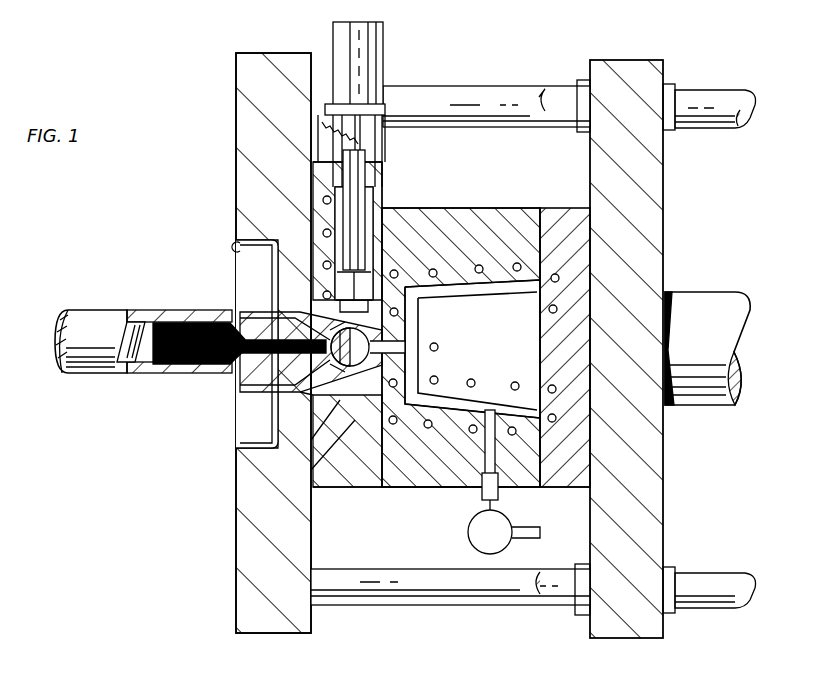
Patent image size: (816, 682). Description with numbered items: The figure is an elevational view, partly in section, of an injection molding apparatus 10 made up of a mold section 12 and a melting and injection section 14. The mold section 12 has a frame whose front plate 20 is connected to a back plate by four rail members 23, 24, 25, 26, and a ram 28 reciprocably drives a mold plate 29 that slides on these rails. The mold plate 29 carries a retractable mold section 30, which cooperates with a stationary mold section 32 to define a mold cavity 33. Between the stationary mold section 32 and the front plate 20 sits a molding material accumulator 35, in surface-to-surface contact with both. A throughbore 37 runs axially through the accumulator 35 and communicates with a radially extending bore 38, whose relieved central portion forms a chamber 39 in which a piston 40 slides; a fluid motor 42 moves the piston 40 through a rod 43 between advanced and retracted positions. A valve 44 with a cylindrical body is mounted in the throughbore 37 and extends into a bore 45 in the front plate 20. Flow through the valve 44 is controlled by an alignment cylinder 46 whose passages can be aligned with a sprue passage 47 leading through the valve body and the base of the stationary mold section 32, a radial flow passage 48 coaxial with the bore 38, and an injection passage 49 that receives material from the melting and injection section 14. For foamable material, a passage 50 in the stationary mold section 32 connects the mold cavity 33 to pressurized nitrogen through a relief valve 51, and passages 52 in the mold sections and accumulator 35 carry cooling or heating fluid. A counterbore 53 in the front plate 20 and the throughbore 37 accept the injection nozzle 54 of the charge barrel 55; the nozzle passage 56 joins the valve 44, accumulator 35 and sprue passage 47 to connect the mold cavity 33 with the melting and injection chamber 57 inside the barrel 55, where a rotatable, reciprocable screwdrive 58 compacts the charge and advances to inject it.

The injection molding apparatus 10 is at (158, 502).
The mold section 12 is at (697, 241).
The melting and injection section 14 is at (62, 395).
The front plate 20 is at (237, 590).
The rail member 23 is at (727, 100).
The rail member 24 is at (706, 585).
The rail member 25 is at (528, 96).
The rail member 26 is at (470, 600).
The ram 28 is at (705, 410).
The mold plate 29 is at (667, 178).
The retractable mold section 30 is at (578, 212).
The stationary mold section 32 is at (500, 290).
The mold cavity 33 is at (503, 285).
The molding material accumulator 35 is at (368, 488).
The throughbore 37 is at (254, 344).
The radially extending bore 38 is at (340, 302).
The chamber 39 is at (384, 205).
The piston 40 is at (392, 220).
The fluid motor 42 is at (385, 46).
The rod 43 is at (362, 156).
The valve 44 is at (358, 430).
The bore 45 is at (256, 390).
The alignment cylinder 46 is at (350, 372).
The sprue passage 47 is at (375, 346).
The radial flow passage 48 is at (252, 315).
The injection passage 49 is at (311, 458).
The outwardly extending passage 50 is at (485, 478).
The relief valve 51 is at (467, 541).
The passages 52 is at (322, 198).
The counterbore 53 is at (240, 246).
The injection nozzle 54 is at (240, 378).
The charge barrel 55 is at (85, 315).
The passage 56 is at (245, 318).
The melting and injection chamber 57 is at (178, 322).
The screwdrive 58 is at (133, 366).